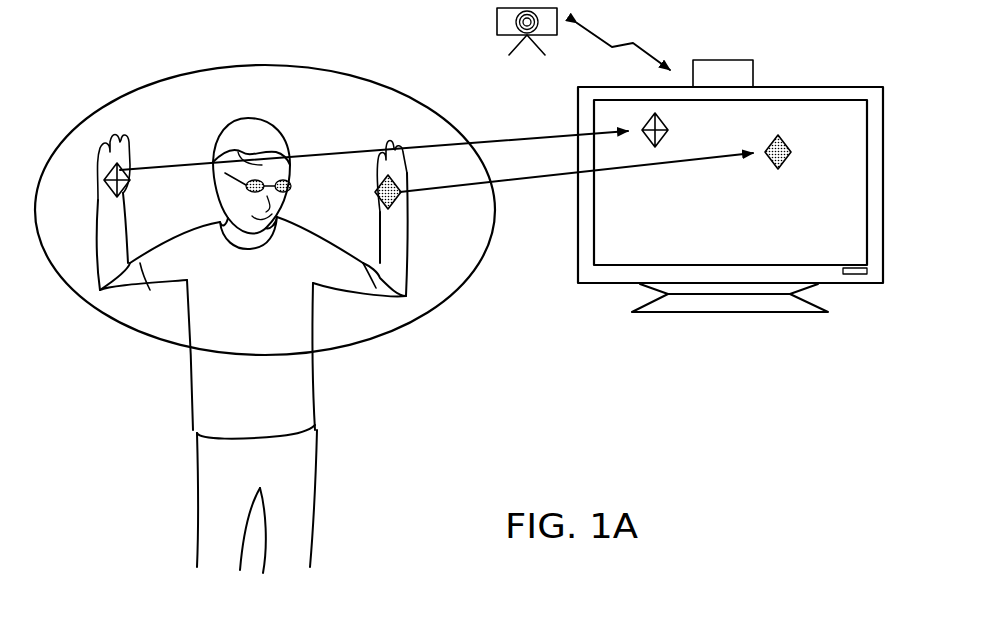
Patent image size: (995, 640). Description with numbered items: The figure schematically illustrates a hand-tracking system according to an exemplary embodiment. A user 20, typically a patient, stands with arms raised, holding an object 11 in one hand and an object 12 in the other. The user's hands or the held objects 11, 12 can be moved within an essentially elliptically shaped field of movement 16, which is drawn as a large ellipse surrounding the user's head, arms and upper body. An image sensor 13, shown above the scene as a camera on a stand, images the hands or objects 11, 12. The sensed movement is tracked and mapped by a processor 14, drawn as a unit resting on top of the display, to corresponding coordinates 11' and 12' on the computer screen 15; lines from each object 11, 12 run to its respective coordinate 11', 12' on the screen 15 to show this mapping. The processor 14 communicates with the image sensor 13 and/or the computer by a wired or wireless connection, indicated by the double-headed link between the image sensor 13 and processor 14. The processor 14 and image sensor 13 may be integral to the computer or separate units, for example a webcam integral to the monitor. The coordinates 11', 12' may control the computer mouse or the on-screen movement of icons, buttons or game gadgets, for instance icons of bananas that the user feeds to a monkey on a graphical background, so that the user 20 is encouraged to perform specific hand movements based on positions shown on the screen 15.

The object held by the user 11 is at (91, 180).
The object held by the user 12 is at (359, 192).
The coordinates on the computer screen 11' is at (692, 130).
The coordinates on the computer screen 12' is at (783, 179).
The image sensor 13 is at (497, 30).
The processor 14 is at (727, 60).
The computer screen 15 is at (715, 252).
The field of movement 16 is at (144, 86).
The user 20 is at (220, 372).